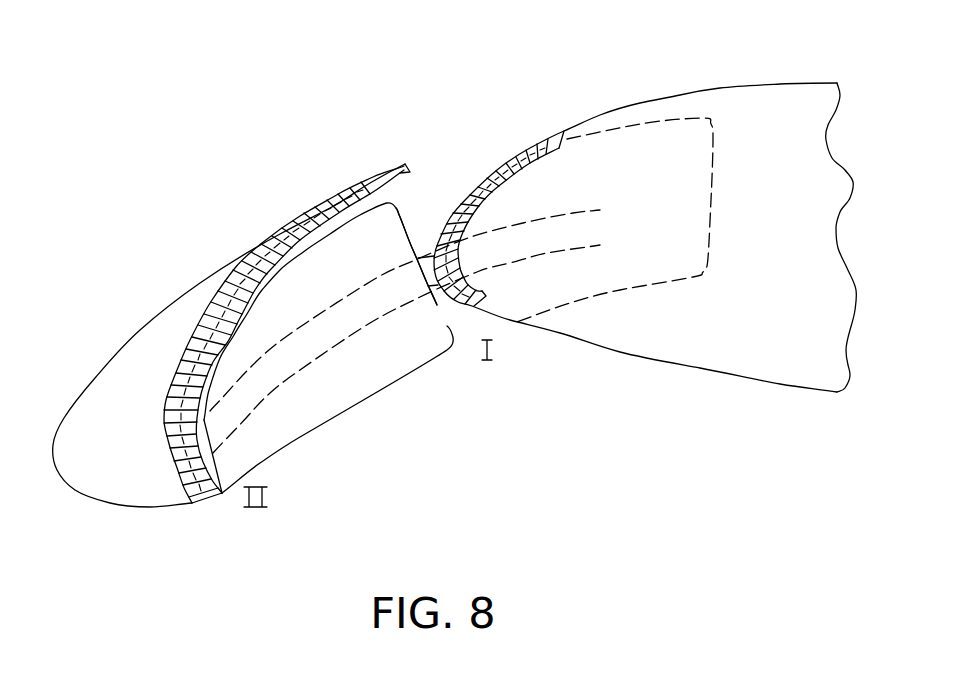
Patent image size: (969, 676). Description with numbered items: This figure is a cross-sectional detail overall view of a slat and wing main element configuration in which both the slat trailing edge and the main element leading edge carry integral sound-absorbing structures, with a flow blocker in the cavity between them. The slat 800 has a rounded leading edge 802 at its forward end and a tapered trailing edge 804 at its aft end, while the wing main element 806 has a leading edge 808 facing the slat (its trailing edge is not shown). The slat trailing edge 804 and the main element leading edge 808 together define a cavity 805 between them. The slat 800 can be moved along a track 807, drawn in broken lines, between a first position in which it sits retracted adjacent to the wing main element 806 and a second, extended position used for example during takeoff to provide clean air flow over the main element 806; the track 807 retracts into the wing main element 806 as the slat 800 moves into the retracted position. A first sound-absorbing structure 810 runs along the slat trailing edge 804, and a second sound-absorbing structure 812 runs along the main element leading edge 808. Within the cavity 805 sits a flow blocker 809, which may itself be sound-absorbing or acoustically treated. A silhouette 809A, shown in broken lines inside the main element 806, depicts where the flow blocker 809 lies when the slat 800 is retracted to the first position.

The slat 800 is at (130, 373).
The leading edge 802 is at (187, 293).
The trailing edge 804 is at (410, 172).
The cavity 805 is at (403, 205).
The wing main element 806 is at (689, 336).
The track 807 is at (571, 253).
The leading edge 808 is at (613, 107).
The flow blocker 809 is at (293, 423).
The silhouette 809A is at (712, 120).
The first sound-absorbing structure 810 is at (288, 243).
The second sound-absorbing structure 812 is at (485, 185).